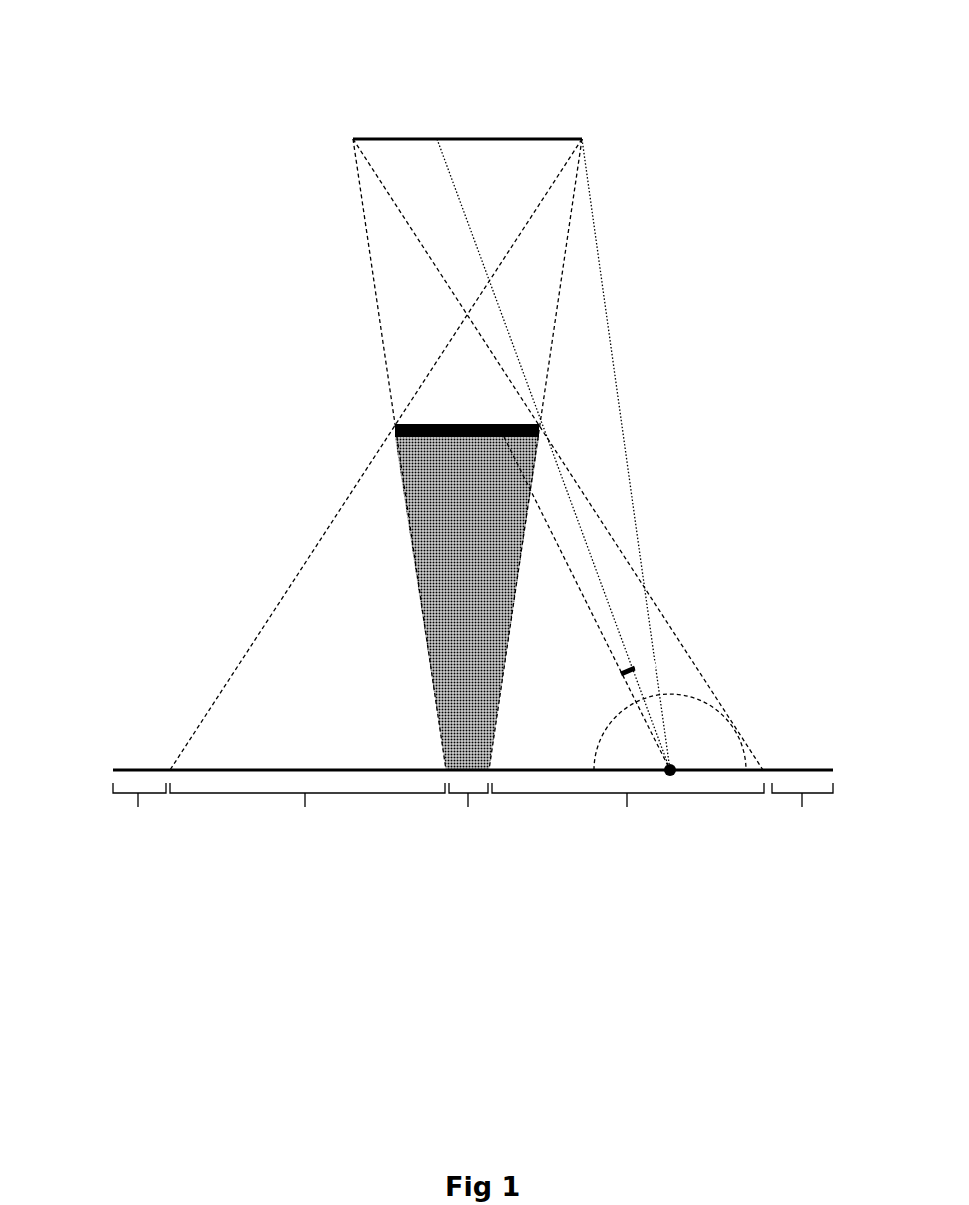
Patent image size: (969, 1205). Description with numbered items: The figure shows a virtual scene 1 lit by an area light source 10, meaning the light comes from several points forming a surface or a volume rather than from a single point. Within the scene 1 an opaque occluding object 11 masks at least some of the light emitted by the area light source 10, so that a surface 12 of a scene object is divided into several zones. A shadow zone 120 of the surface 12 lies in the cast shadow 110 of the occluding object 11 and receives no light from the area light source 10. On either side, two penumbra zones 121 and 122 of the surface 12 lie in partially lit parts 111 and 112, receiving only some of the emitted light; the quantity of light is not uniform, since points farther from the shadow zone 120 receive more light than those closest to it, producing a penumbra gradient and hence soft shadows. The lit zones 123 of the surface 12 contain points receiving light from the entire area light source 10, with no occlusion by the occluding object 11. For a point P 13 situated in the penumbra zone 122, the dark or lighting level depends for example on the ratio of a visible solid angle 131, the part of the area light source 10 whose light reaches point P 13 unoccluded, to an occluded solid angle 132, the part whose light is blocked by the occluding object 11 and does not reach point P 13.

The virtual scene 1 is at (668, 182).
The area light source 10 is at (513, 138).
The occluding object 11 is at (418, 423).
The cast shadow 110 is at (417, 480).
The partially lit part 111 is at (337, 573).
The partially lit part 112 is at (590, 517).
The surface 12 is at (135, 768).
The shadow zone 120 is at (460, 795).
The penumbra zone 121 is at (250, 795).
The penumbra zone 122 is at (608, 795).
The lit zones 123 is at (128, 795).
The point P 13 is at (672, 778).
The visible solid angle 131 is at (642, 662).
The occluded solid angle 132 is at (627, 670).